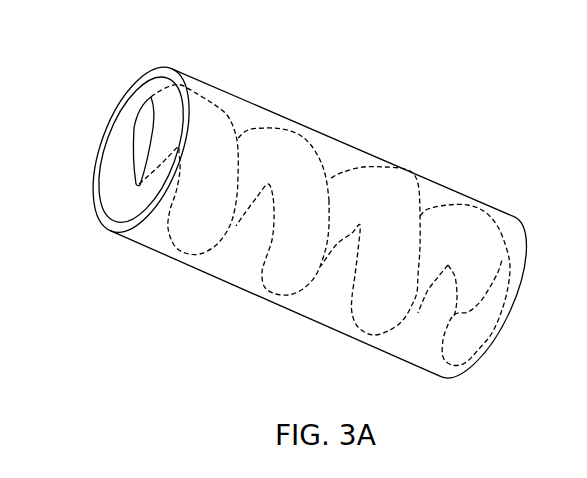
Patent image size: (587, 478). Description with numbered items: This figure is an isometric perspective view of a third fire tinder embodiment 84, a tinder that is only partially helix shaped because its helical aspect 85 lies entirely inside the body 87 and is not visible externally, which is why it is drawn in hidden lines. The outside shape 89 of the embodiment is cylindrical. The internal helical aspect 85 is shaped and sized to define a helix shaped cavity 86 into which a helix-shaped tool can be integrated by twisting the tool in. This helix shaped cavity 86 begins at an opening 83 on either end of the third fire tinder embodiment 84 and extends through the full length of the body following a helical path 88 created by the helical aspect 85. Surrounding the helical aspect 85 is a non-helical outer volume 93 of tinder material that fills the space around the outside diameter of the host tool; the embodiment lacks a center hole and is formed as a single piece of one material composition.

The opening 83 is at (123, 153).
The third fire tinder embodiment 84 is at (352, 93).
The helical aspect 85 is at (367, 233).
The helix shaped cavity 86 is at (293, 243).
The body 87 is at (248, 117).
The helical path 88 is at (237, 192).
The outside shape 89 is at (172, 71).
The outer volume 93 is at (100, 213).